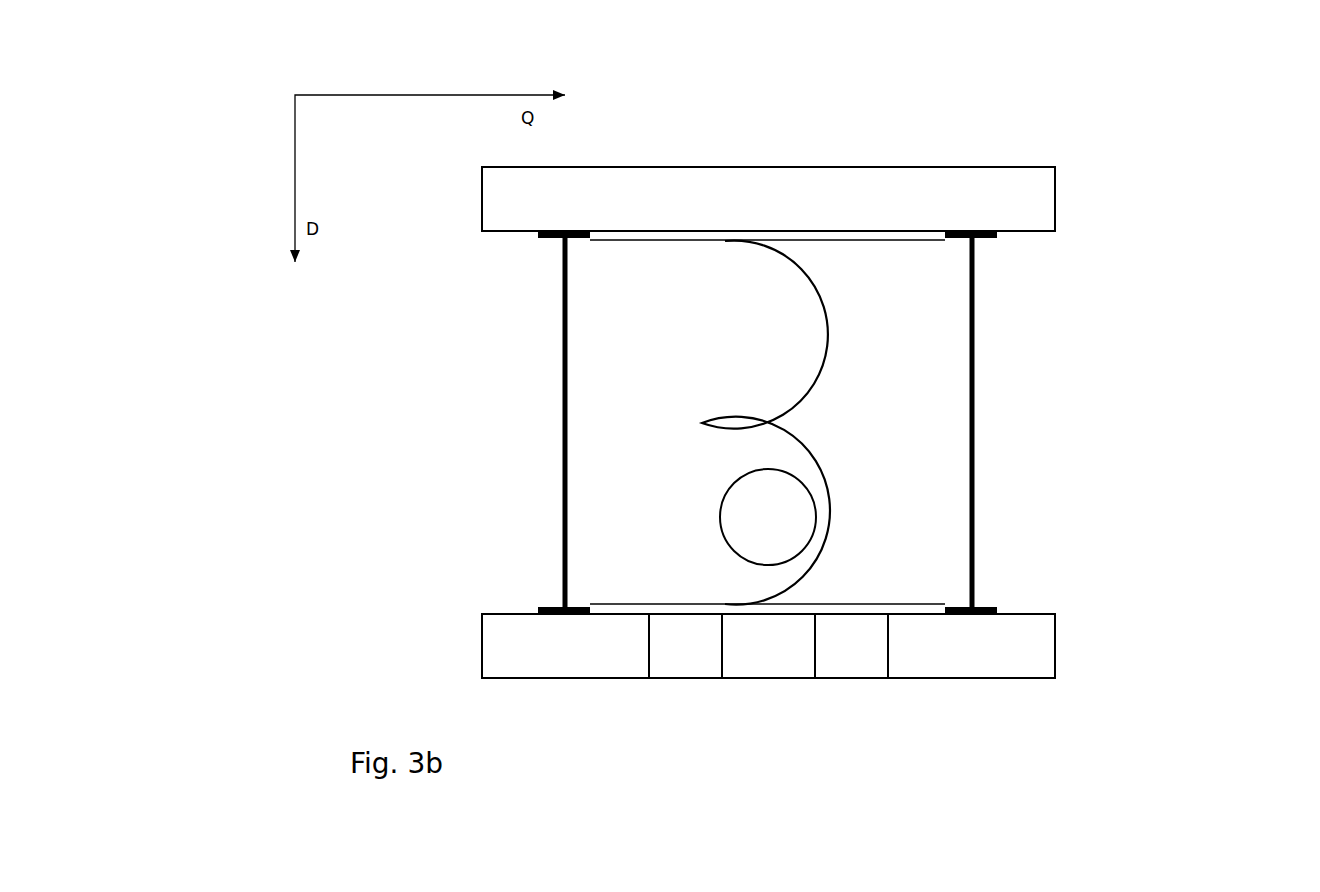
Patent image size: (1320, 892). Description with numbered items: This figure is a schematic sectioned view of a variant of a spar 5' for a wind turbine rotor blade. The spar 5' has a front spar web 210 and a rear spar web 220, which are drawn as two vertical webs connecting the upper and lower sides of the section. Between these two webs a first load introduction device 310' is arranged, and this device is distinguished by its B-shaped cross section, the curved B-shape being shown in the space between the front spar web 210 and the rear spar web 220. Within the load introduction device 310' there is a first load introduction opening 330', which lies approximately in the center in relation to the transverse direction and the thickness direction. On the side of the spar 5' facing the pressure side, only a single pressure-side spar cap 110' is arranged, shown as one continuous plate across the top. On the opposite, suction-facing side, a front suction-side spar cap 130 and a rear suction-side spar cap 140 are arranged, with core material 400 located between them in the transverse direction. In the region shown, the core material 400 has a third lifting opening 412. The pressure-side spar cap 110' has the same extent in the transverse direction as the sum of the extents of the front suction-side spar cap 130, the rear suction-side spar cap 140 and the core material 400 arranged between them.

The spar 5' is at (1235, 145).
The front pressure-side spar cap 110' is at (768, 166).
The front spar web 210 is at (563, 510).
The rear spar web 220 is at (975, 499).
The first load introduction device 310' is at (893, 423).
The first load introduction opening 330' is at (943, 503).
The front suction-side spar cap 130 is at (500, 660).
The rear suction-side spar cap 140 is at (1050, 656).
The core material 400 is at (700, 661).
The third lifting opening 412 is at (758, 656).